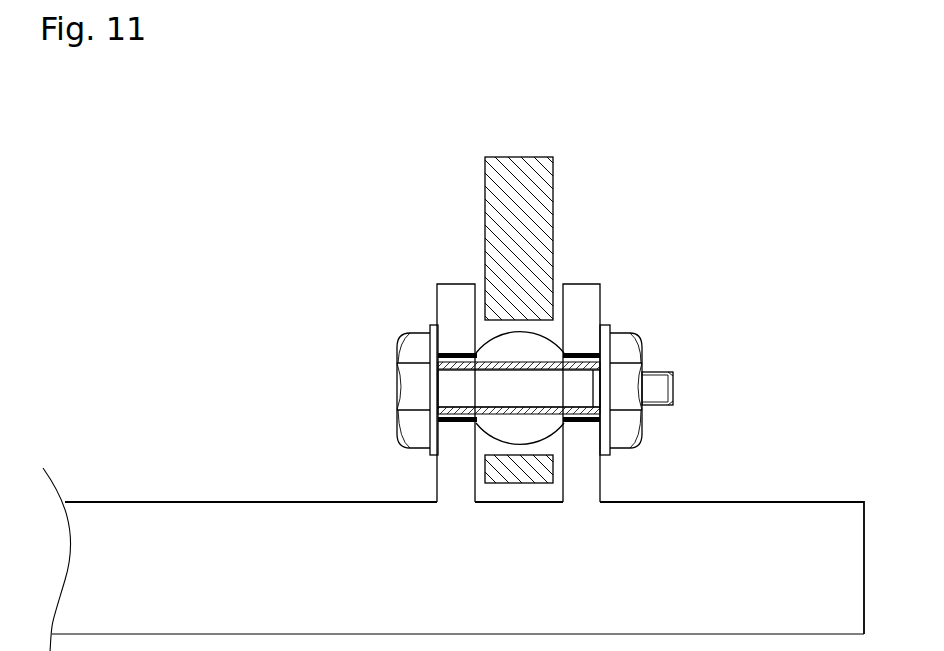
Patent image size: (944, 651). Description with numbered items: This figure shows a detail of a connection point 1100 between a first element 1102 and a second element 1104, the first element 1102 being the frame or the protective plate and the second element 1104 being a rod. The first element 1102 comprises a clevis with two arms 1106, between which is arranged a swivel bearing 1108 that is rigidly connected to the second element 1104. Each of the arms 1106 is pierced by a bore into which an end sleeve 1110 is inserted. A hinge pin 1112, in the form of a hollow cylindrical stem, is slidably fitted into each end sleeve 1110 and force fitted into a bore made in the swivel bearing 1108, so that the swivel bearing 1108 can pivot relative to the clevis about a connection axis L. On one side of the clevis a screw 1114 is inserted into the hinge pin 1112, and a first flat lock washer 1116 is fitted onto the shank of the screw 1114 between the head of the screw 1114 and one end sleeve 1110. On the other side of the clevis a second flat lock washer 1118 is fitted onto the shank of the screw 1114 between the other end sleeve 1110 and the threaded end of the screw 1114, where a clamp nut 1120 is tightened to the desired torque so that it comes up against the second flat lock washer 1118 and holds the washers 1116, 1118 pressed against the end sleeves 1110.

The connection point 1100 is at (700, 259).
The first element 1102 is at (200, 585).
The second element 1104 is at (545, 165).
The arms 1106 is at (585, 297).
The swivel bearing 1108 is at (513, 345).
The end sleeve 1110 is at (450, 423).
The hinge pin 1112 is at (553, 423).
The screw 1114 is at (405, 345).
The first flat lock washer 1116 is at (430, 323).
The second flat lock washer 1118 is at (610, 325).
The clamp nut 1120 is at (630, 343).
The connection axis L is at (505, 388).